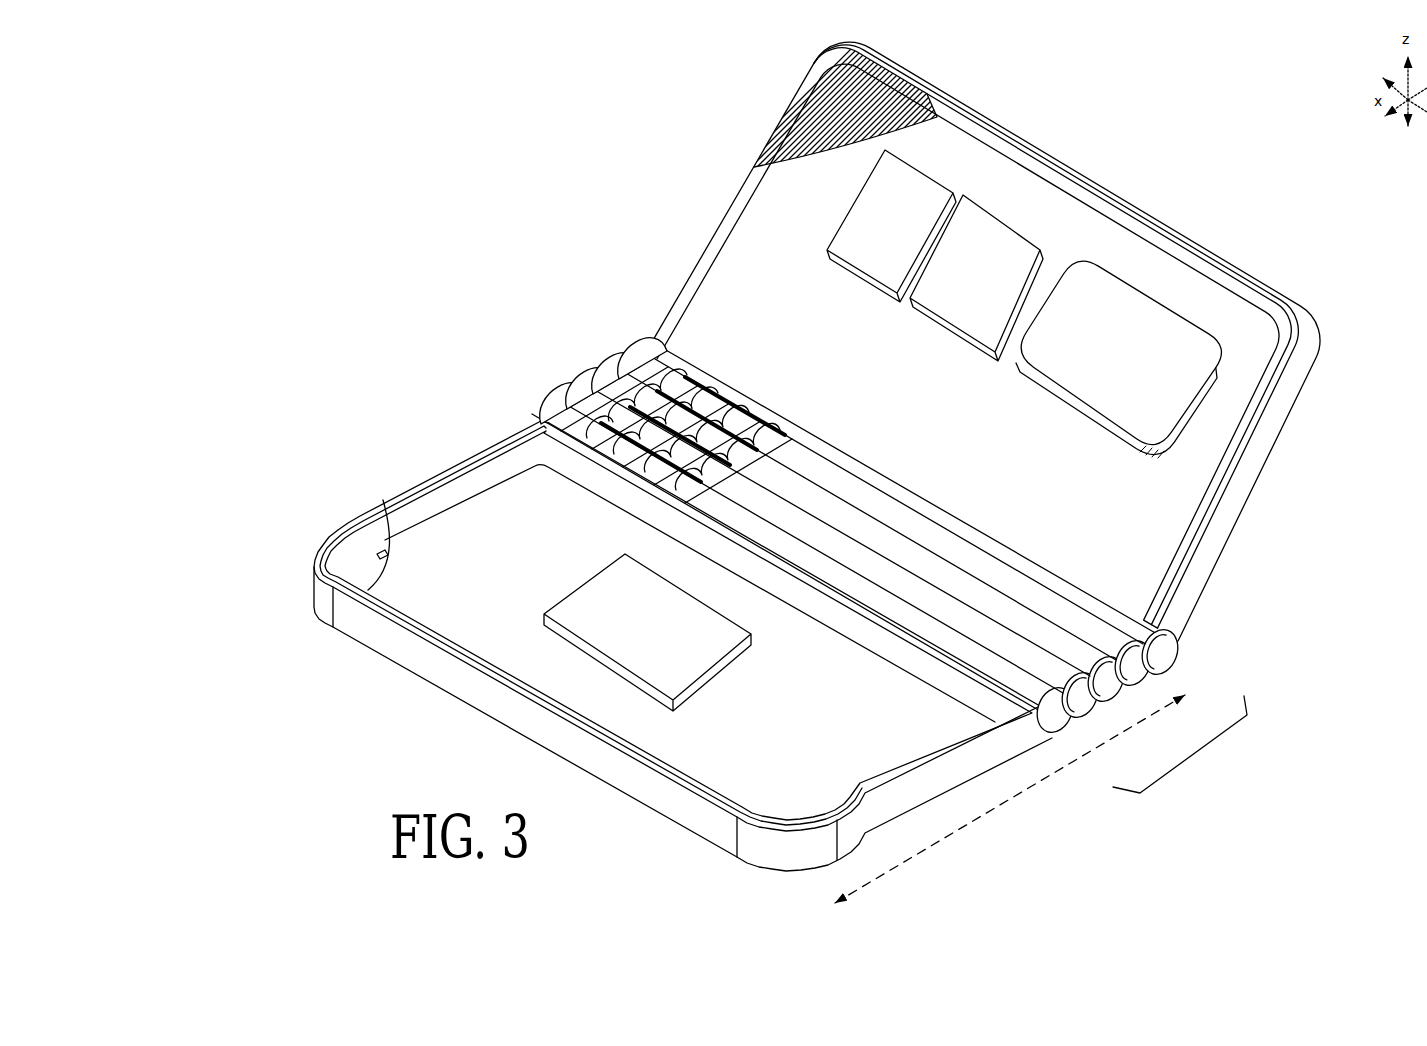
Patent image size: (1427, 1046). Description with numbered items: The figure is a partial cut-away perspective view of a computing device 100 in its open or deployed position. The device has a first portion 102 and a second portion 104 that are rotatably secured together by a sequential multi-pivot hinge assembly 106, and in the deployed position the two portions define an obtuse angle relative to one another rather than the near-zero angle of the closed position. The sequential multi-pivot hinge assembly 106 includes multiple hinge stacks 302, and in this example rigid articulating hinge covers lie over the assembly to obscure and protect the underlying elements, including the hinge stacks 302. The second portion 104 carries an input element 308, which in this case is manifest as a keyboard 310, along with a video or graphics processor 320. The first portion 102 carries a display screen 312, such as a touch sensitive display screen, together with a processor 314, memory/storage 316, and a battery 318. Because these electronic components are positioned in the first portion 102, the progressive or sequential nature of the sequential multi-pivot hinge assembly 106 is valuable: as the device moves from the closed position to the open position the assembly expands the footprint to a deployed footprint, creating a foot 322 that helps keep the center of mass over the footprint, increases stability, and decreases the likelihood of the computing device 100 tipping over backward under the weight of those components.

The computing device 100 is at (745, 125).
The first portion 102 is at (1046, 150).
The second portion 104 is at (450, 689).
The sequential multi-pivot hinge assembly 106 is at (981, 526).
The hinge stack 302 is at (736, 383).
The input element 308 is at (373, 553).
The keyboard 310 is at (383, 548).
The display screen 312 is at (778, 102).
The processor 314 is at (891, 226).
The memory/storage 316 is at (976, 278).
The battery 318 is at (1118, 359).
The graphics processor 320 is at (647, 632).
The foot 322 is at (1197, 755).